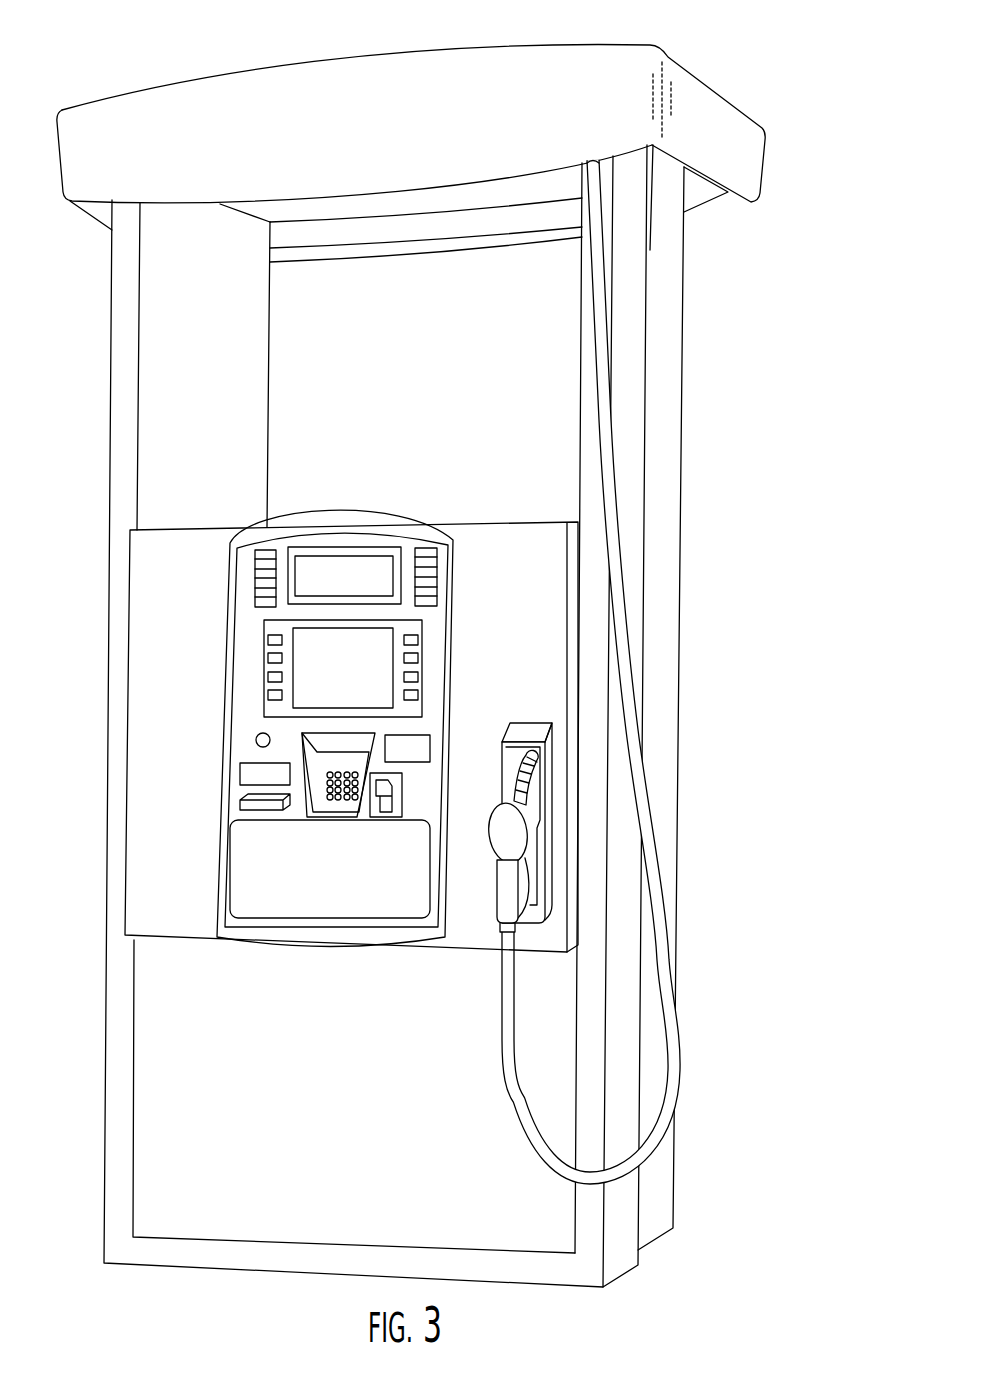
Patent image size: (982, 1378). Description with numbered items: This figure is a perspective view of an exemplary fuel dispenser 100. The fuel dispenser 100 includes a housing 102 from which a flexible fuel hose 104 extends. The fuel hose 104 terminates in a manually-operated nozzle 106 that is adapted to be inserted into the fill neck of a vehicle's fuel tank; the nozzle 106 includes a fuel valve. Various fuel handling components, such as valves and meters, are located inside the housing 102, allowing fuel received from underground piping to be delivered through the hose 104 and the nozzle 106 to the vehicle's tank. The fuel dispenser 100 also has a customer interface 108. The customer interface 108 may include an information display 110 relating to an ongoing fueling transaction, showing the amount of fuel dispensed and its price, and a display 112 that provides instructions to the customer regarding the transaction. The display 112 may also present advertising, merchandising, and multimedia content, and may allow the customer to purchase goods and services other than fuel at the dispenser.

The fuel dispenser 100 is at (784, 87).
The housing 102 is at (682, 540).
The flexible fuel hose 104 is at (637, 705).
The manually-operated nozzle 106 is at (505, 900).
The customer interface 108 is at (351, 691).
The information display 110 is at (367, 547).
The display 112 is at (382, 642).